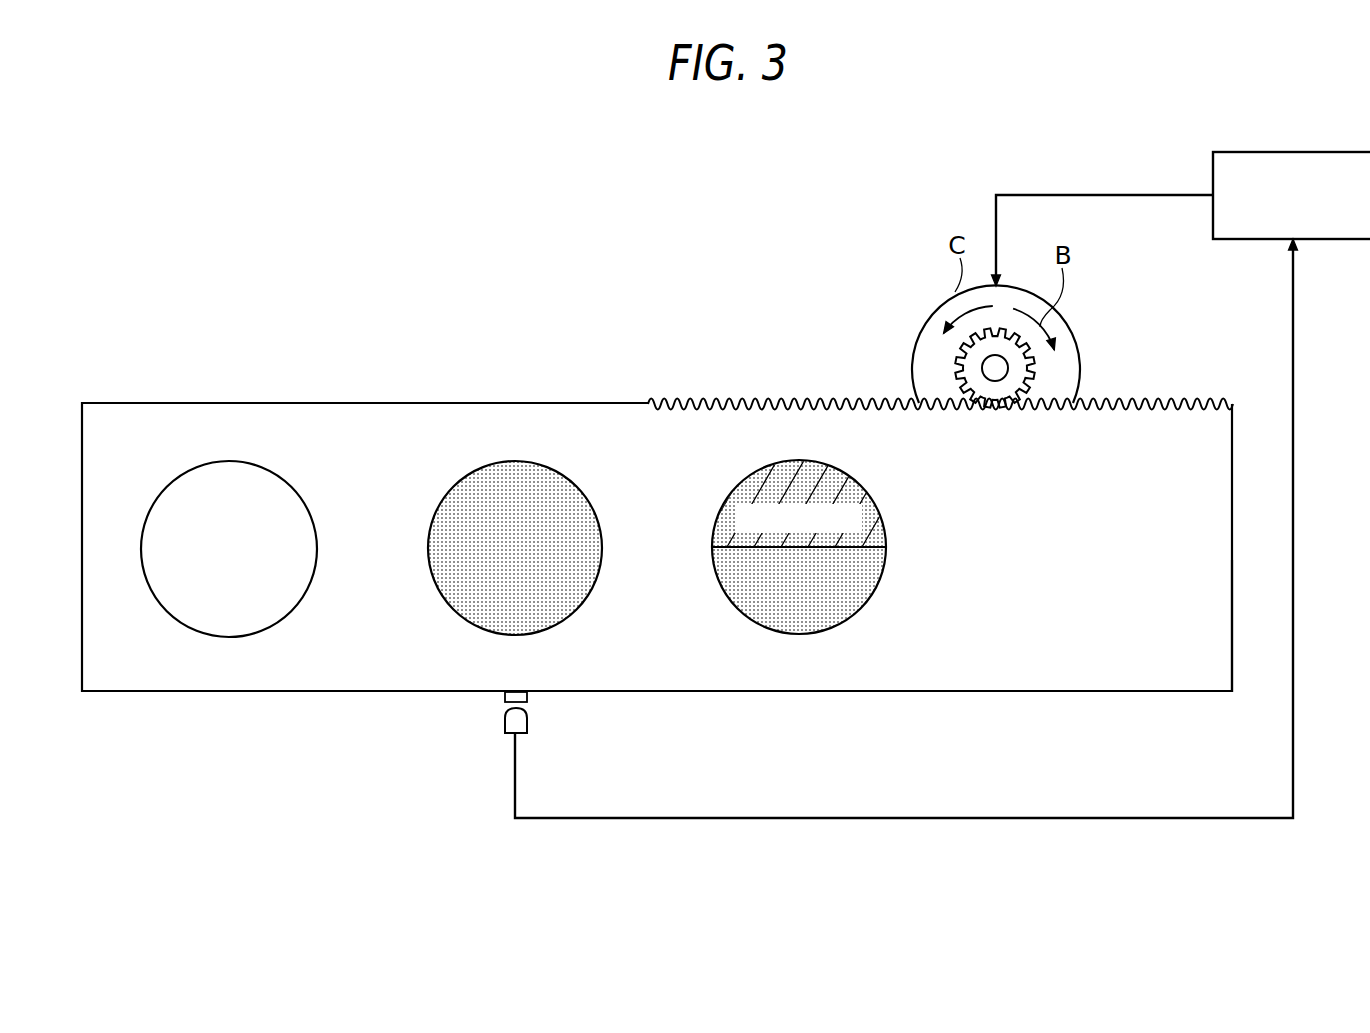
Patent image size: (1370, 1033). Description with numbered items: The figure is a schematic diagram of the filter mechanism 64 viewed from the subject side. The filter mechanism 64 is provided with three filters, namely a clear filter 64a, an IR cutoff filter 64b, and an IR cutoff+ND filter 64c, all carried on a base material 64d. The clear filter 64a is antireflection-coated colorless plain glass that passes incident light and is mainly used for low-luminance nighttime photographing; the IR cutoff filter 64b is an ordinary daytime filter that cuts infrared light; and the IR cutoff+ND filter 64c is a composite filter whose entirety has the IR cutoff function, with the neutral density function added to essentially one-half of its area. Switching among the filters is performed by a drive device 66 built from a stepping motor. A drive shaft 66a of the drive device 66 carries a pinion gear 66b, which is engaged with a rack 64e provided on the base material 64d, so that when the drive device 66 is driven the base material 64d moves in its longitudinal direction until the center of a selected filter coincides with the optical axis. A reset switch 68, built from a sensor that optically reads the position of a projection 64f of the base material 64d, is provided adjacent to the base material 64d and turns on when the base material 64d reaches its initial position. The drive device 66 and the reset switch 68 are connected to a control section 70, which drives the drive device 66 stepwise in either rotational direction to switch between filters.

The control section 70 is at (1290, 152).
The drive device 66 is at (1081, 349).
The drive shaft 66a is at (982, 360).
The pinion gear 66b is at (957, 367).
The filter mechanism 64 is at (206, 792).
The clear filter 64a is at (241, 478).
The IR cutoff filter 64b is at (512, 478).
The IR cutoff+ND filter 64c is at (808, 630).
The base material 64d is at (985, 672).
The rack 64e is at (693, 398).
The projection 64f is at (529, 699).
The reset switch 68 is at (503, 720).